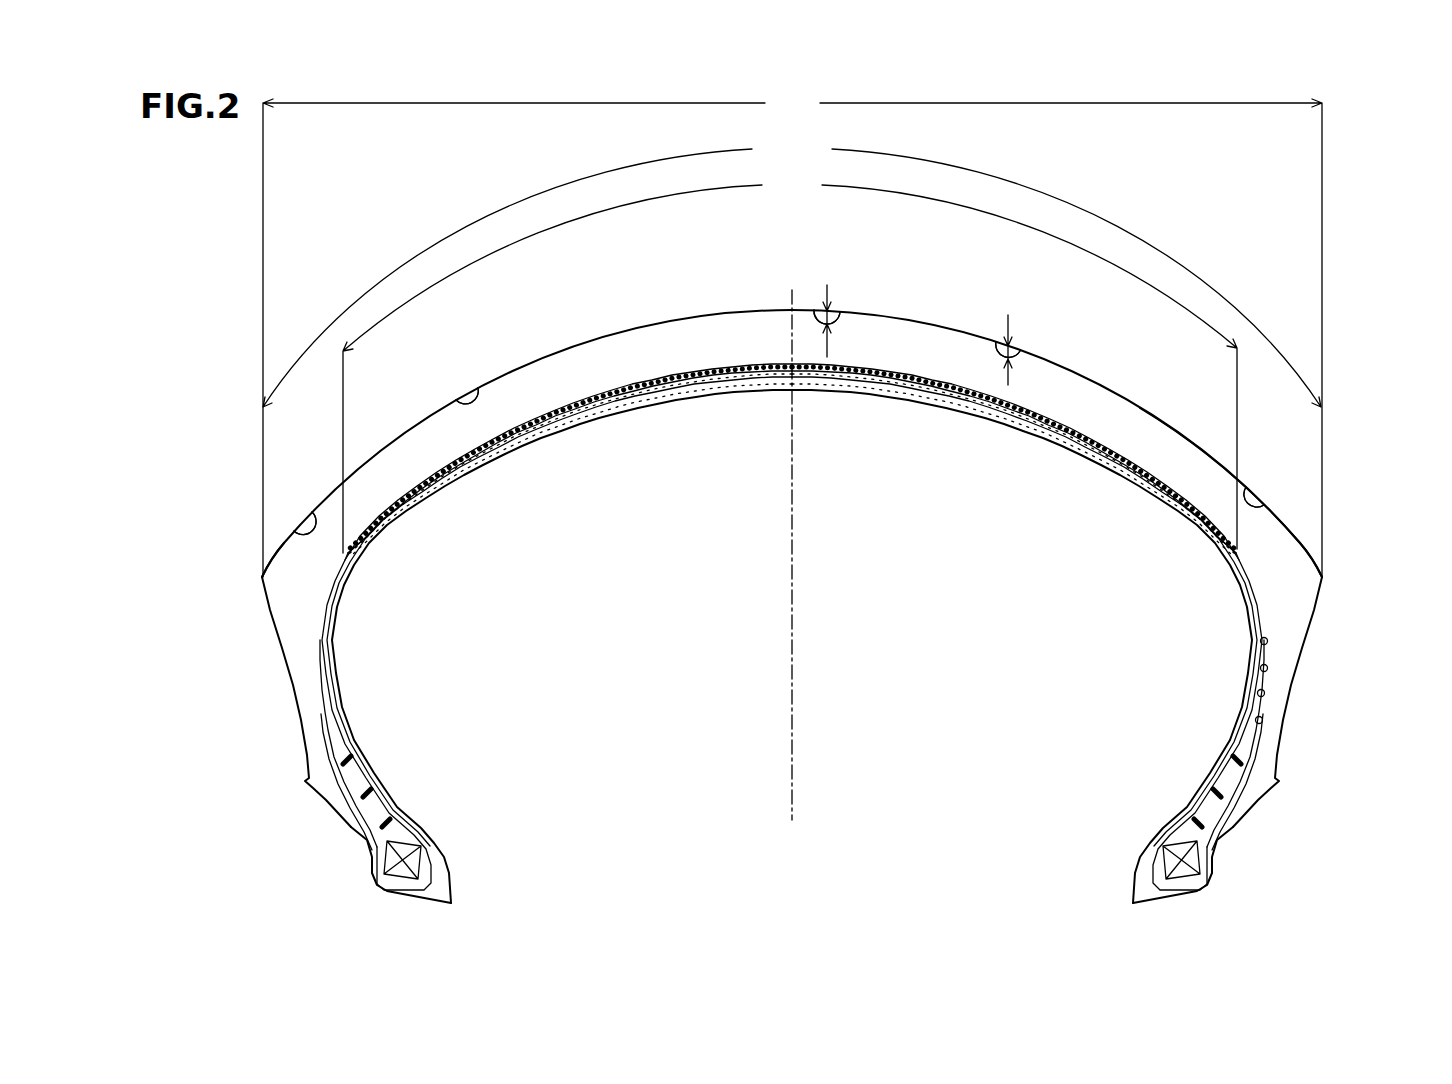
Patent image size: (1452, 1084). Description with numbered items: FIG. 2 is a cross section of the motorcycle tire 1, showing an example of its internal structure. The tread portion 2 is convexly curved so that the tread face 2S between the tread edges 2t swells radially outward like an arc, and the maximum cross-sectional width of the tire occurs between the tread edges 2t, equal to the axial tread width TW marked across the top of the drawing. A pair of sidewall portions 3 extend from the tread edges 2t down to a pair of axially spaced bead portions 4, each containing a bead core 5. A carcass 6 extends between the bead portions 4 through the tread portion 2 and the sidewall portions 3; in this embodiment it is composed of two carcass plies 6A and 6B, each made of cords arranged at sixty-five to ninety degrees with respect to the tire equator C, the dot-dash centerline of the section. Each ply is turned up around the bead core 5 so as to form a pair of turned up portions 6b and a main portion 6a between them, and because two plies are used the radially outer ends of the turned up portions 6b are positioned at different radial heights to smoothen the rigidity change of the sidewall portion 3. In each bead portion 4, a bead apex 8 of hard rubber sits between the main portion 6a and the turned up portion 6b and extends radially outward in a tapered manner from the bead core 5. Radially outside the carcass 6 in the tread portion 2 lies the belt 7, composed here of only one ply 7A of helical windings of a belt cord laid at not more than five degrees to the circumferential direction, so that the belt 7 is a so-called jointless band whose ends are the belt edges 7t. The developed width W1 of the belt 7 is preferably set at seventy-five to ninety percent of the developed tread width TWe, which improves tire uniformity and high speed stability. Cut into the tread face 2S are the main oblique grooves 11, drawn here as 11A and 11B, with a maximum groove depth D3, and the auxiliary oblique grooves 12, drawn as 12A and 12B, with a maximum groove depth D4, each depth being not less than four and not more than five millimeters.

The pneumatic tire 1 is at (1333, 263).
The tread portion 2 is at (1065, 341).
The tread face 2S is at (1140, 405).
The tread edges 2t is at (259, 580).
The sidewall portions 3 is at (1309, 702).
The bead portions 4 is at (1231, 862).
The bead core 5 is at (1160, 862).
The carcass 6 is at (1062, 625).
The carcass ply 6A is at (1115, 685).
The carcass ply 6B is at (1115, 752).
The main portion 6a is at (1258, 694).
The turned up portions 6b is at (1256, 721).
The belt 7 is at (900, 364).
The belt ply 7A is at (792, 546).
The belt edge 7t is at (344, 555).
The bead apex 8 is at (1190, 818).
The main oblique grooves 11 is at (471, 382).
The shoulder circumferential groove 11A is at (1252, 487).
The circumferential groove 11B is at (467, 396).
The auxiliary oblique grooves 12 is at (307, 513).
The crown circumferential groove 12A is at (1008, 349).
The circumferential groove 12B is at (305, 523).
The axial tread width TW is at (792, 333).
The developed tread width TWe is at (792, 271).
The developed width of the belt W1 is at (790, 362).
The tire equator C is at (792, 539).
The maximum groove depth D3 is at (838, 330).
The maximum groove depth D4 is at (1012, 358).